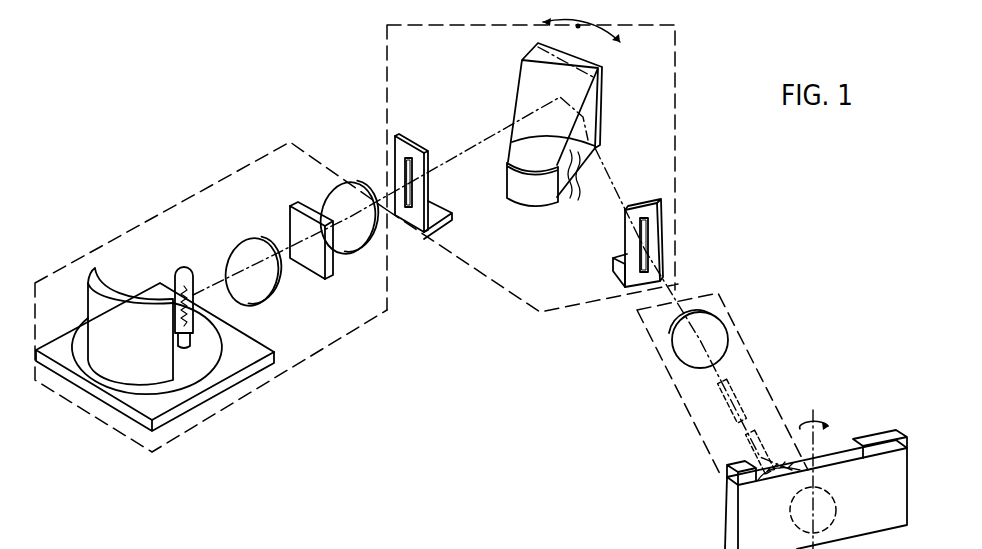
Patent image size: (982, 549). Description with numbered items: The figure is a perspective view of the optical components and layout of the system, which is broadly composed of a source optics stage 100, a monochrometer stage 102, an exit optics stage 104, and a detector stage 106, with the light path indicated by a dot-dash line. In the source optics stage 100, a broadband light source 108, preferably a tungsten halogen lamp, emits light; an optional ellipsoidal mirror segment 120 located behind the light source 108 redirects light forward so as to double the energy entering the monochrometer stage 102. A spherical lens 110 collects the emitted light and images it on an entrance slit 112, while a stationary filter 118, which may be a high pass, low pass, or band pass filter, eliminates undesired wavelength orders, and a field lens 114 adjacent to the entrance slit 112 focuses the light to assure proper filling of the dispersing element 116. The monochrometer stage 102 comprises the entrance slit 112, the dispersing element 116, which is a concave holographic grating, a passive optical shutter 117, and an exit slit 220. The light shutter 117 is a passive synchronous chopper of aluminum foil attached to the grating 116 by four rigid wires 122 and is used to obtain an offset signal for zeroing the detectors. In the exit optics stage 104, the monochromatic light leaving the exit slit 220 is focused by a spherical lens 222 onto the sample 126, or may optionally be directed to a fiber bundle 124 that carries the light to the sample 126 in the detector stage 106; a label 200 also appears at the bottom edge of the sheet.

The source optics stage 100 is at (329, 352).
The monochrometer stage 102 is at (491, 284).
The exit optics stage 104 is at (662, 375).
The detector stage 106 is at (725, 528).
The broadband light source 108 is at (181, 266).
The spherical lens 110 is at (237, 239).
The entrance slit 112 is at (393, 152).
The field lens 114 is at (328, 184).
The dispersing element 116 is at (607, 117).
The passive optical shutter 117 is at (518, 208).
The stationary filter 118 is at (290, 217).
The ellipsoidal mirror segment 120 is at (88, 283).
The rigid wires 122 is at (520, 128).
The fiber bundle 124 is at (745, 408).
The sample 126 is at (800, 478).
The spectrophotometer system 200 is at (286, 546).
The exit slit 220 is at (661, 238).
The spherical lens 222 is at (728, 332).